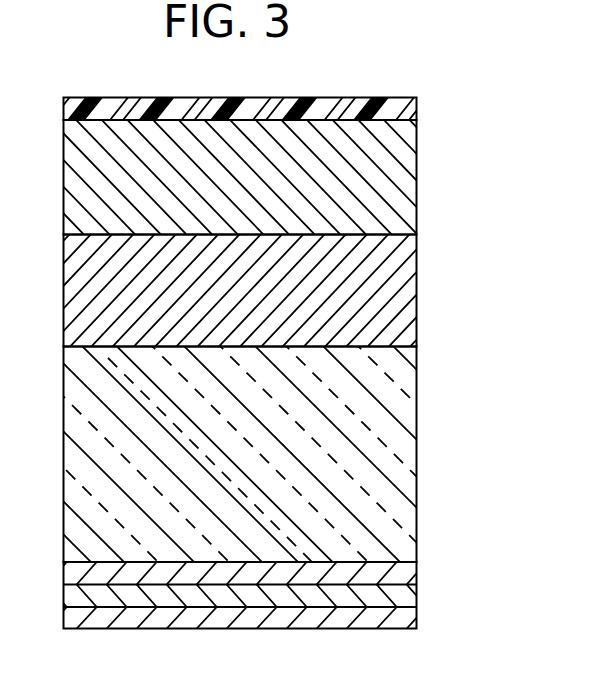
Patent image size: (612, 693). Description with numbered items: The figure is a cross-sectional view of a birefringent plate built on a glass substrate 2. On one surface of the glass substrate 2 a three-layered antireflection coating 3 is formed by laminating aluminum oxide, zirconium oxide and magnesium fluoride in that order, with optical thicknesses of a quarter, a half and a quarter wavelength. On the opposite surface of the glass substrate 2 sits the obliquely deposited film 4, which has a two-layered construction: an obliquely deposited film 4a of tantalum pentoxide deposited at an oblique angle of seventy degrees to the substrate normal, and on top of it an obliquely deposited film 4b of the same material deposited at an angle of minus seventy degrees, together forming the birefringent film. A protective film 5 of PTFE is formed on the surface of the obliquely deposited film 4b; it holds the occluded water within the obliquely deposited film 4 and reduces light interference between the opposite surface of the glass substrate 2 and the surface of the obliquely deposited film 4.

The protective film 5 is at (402, 116).
The obliquely deposited film 4 is at (284, 226).
The obliquely deposited film 4b is at (398, 190).
The obliquely deposited film 4a is at (262, 294).
The glass substrate 2 is at (400, 442).
The three-layered antireflection coating 3 is at (448, 562).